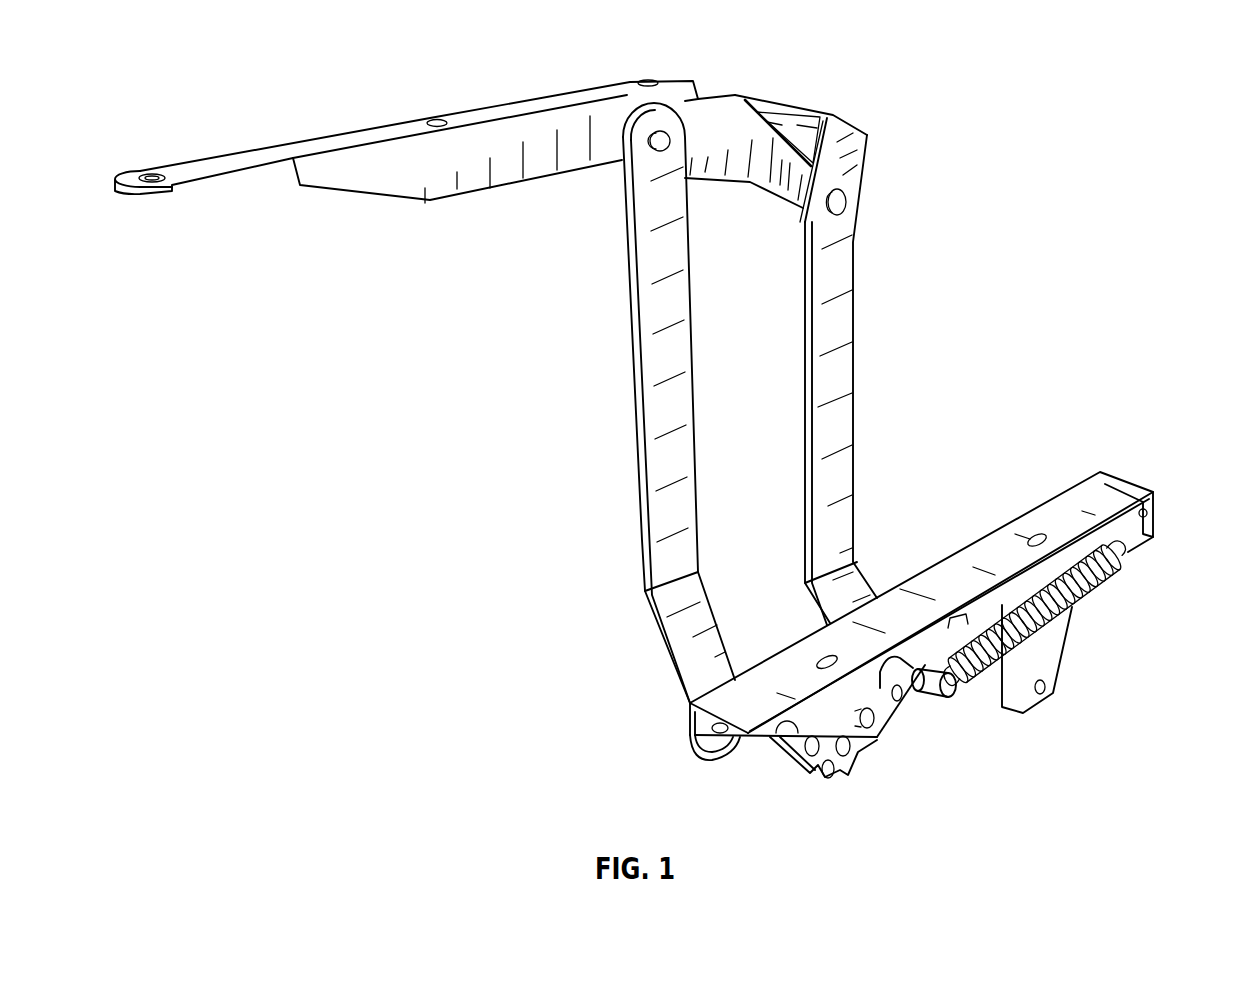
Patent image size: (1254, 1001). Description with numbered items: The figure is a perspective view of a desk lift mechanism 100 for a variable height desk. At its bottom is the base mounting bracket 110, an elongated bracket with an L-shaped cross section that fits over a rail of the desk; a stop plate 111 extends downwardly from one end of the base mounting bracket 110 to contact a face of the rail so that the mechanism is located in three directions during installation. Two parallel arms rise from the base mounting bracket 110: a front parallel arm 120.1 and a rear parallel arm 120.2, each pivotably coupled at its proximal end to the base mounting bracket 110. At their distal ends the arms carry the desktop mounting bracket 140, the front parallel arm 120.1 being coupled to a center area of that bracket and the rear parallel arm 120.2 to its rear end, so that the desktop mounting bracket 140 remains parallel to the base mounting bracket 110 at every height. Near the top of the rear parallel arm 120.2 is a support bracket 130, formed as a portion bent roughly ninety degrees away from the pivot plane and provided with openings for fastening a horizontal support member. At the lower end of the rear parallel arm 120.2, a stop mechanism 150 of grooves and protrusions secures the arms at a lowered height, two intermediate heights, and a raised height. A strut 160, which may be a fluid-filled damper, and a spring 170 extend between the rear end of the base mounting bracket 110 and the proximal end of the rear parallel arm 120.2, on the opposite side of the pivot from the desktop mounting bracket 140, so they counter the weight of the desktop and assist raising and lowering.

The desk lift mechanism 100 is at (944, 35).
The base mounting bracket 110 is at (1091, 493).
The stop plate 111 is at (1155, 508).
The front parallel arm 120.1 is at (674, 397).
The rear parallel arm 120.2 is at (843, 320).
The support bracket 130 is at (795, 108).
The desktop mounting bracket 140 is at (266, 155).
The stop mechanism 150 is at (817, 800).
The strut 160 is at (983, 690).
The spring 170 is at (1108, 570).